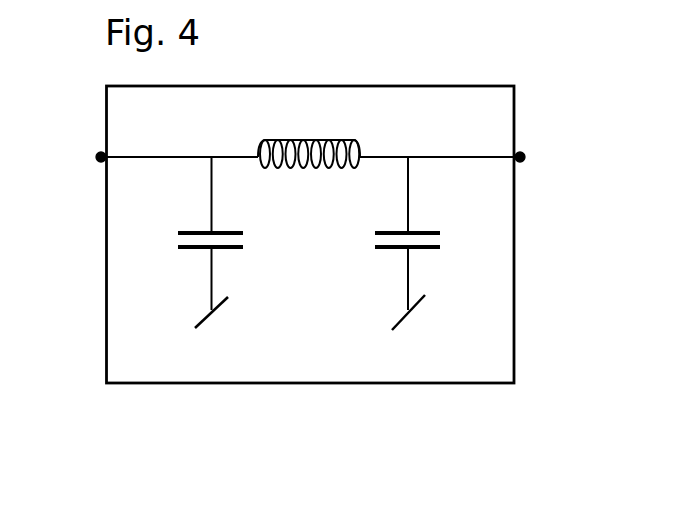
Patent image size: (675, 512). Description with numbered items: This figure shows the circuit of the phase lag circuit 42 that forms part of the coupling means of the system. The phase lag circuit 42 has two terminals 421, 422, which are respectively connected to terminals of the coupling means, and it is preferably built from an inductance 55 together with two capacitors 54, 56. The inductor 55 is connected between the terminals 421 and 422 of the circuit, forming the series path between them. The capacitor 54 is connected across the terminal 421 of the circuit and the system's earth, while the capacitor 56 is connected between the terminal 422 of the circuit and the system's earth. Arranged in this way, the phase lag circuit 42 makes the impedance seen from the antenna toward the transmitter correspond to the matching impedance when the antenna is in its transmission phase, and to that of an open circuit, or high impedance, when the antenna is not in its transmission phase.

The phase lag circuit 42 is at (312, 418).
The terminal 421 is at (101, 157).
The terminal 422 is at (520, 157).
The capacitor 54 is at (209, 242).
The inductance 55 is at (305, 168).
The capacitor 56 is at (409, 243).